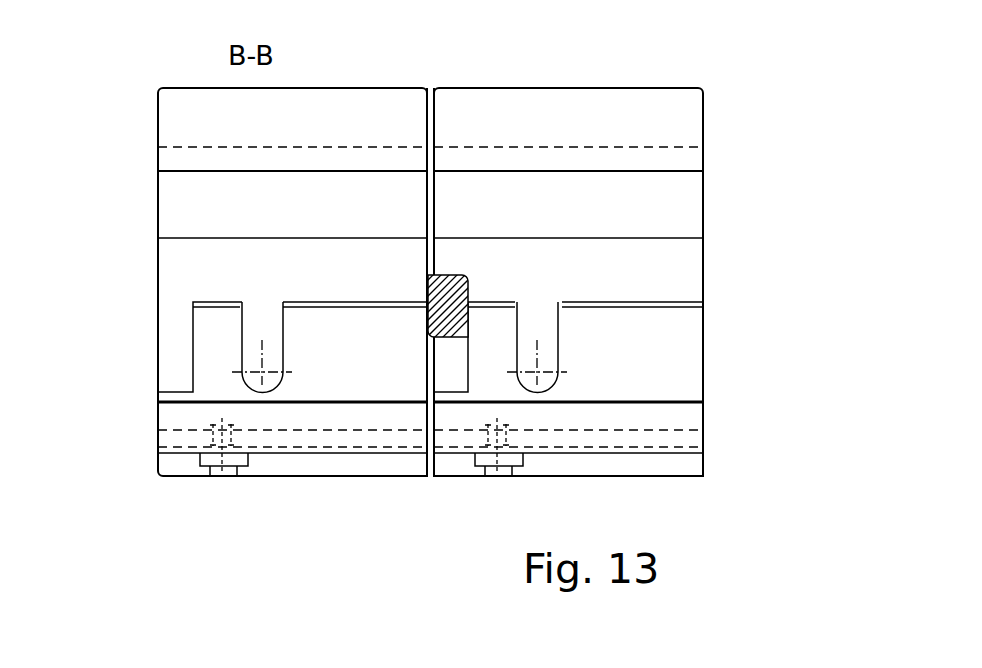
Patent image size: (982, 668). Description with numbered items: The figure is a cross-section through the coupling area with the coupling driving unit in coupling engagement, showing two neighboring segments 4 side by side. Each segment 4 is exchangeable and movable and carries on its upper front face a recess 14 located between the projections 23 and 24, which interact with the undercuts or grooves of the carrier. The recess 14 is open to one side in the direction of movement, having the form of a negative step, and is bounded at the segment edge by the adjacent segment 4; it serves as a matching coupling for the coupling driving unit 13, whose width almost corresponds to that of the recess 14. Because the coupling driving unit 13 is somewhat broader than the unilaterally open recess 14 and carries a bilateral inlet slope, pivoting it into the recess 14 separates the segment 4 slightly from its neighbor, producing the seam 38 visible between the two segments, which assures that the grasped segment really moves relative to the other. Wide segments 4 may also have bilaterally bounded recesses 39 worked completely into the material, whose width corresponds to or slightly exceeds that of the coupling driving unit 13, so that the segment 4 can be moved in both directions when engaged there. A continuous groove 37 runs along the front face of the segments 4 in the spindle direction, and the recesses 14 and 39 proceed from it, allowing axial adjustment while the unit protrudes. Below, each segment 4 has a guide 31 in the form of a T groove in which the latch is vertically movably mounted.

The segment 4 is at (157, 134).
The coupling driving unit 13 is at (458, 297).
The recess 14 is at (176, 345).
The projection 23 is at (662, 172).
The projection 24 is at (638, 458).
The guide 31 is at (220, 474).
The continuous groove 37 is at (357, 283).
The seam 38 is at (433, 88).
The recess 39 is at (272, 356).